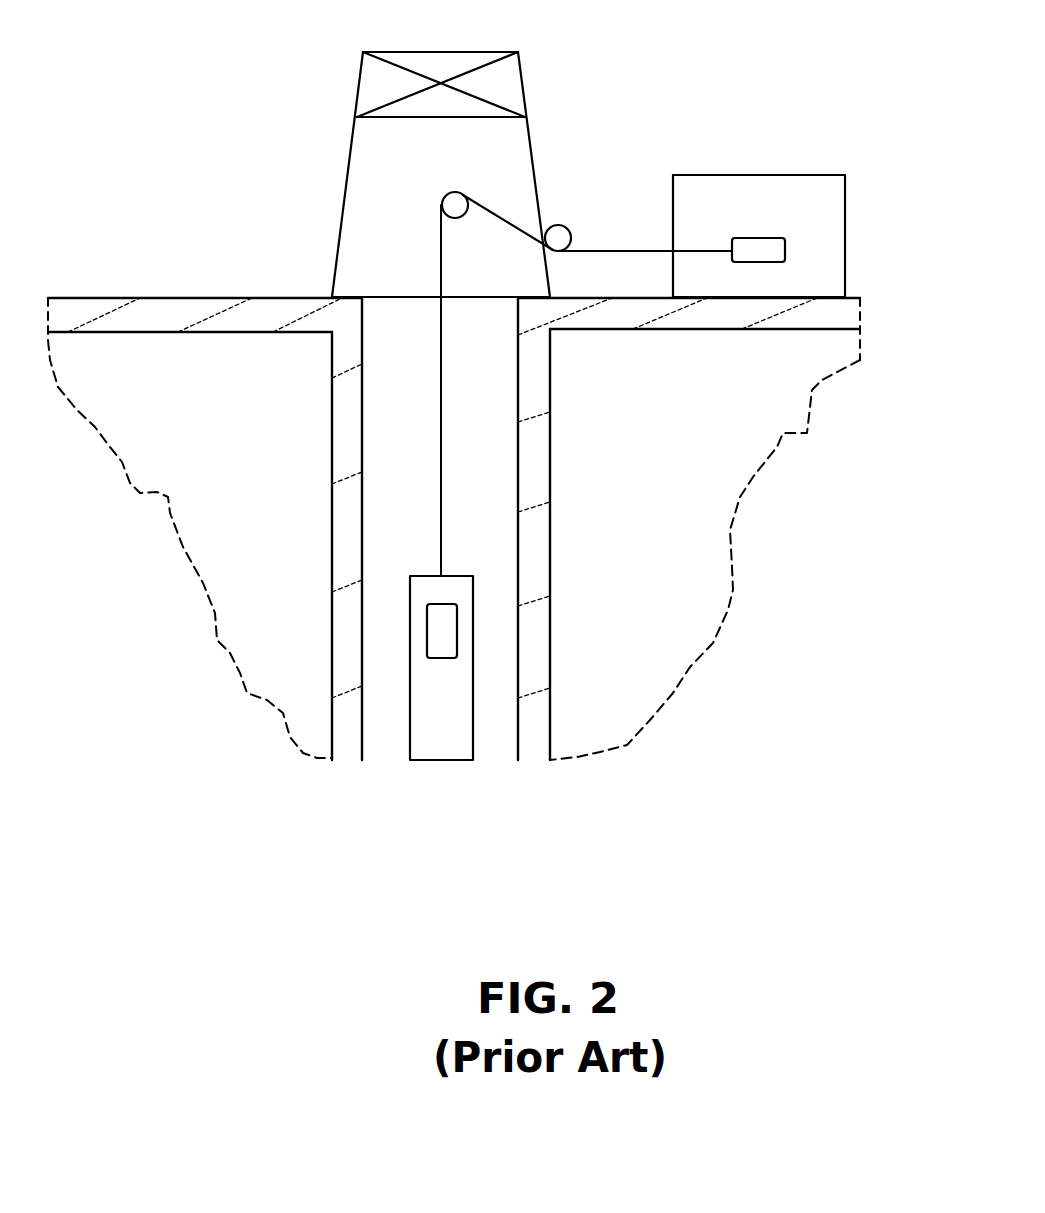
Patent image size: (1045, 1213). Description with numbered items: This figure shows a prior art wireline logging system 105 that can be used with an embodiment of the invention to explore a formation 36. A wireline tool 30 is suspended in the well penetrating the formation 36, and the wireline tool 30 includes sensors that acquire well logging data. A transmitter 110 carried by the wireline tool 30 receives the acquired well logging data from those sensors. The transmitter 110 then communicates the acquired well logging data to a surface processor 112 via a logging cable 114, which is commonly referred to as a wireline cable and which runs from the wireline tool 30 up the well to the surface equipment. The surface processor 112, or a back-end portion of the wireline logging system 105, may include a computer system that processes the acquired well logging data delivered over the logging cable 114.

The wireline logging system 105 is at (645, 97).
The logging cable 114 is at (586, 384).
The surface processor 112 is at (826, 228).
The formation 36 is at (656, 437).
The transmitter 110 is at (460, 630).
The wireline tool 30 is at (433, 760).